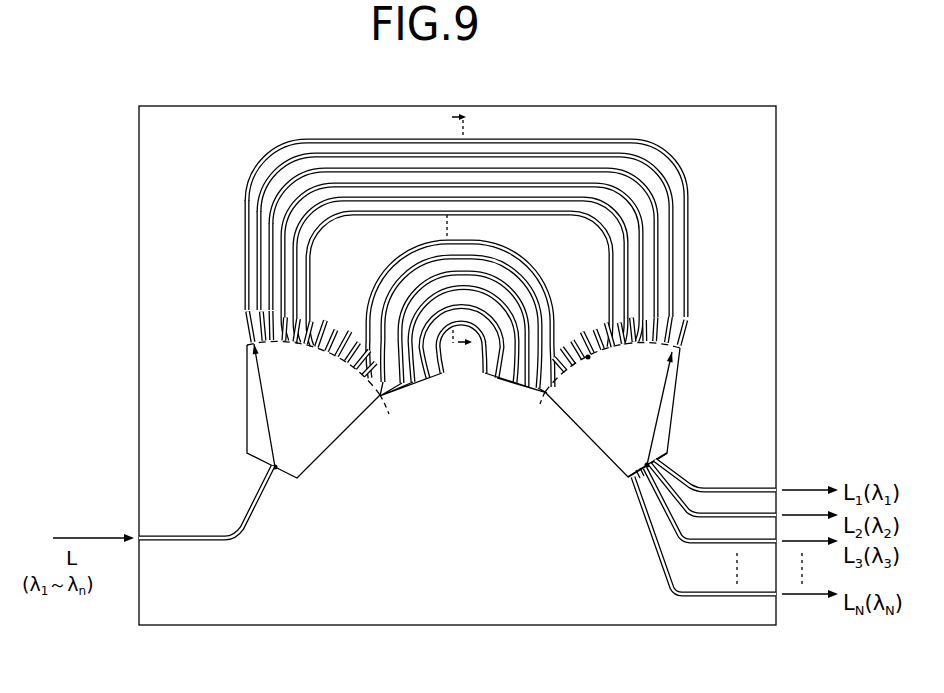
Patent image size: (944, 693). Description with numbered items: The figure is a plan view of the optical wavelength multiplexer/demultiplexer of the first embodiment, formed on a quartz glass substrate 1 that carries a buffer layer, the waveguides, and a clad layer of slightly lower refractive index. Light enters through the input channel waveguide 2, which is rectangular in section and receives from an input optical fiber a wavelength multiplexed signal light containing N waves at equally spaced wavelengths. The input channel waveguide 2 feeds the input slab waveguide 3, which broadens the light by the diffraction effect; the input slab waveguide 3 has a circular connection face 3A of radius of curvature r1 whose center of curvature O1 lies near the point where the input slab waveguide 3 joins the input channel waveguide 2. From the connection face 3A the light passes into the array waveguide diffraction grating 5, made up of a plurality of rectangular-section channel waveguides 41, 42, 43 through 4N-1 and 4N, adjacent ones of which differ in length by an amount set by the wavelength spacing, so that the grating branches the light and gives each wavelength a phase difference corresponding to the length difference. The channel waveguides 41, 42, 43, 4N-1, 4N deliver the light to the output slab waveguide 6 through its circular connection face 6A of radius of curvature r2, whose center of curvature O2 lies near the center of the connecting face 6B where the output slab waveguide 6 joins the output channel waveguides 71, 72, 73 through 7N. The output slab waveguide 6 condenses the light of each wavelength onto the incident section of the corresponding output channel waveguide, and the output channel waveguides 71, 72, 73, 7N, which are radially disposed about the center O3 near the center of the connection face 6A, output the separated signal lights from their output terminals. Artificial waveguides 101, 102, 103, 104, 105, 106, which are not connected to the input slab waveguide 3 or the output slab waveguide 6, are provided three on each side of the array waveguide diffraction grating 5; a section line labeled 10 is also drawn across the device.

The quartz glass substrate 1 is at (750, 262).
The input channel waveguide 2 is at (183, 542).
The input slab waveguide 3 is at (332, 440).
The circular connection face 3A is at (380, 400).
The channel waveguide 41 is at (427, 218).
The channel waveguide 42 is at (419, 218).
The channel waveguide 43 is at (422, 220).
The channel waveguide 4N-1 is at (512, 273).
The channel waveguide 4N is at (512, 308).
The array waveguide diffraction grating 5 is at (427, 276).
The output slab waveguide 6 is at (583, 436).
The circular connection face 6A is at (545, 392).
The connecting face 6B is at (632, 480).
The output channel waveguide 71 is at (747, 491).
The output channel waveguide 72 is at (710, 511).
The output channel waveguide 73 is at (720, 547).
The output channel waveguide 7N is at (690, 598).
The cross-section line 10 is at (472, 240).
The artificial waveguide 101 is at (246, 240).
The artificial waveguide 102 is at (258, 265).
The artificial waveguide 103 is at (268, 292).
The artificial waveguide 104 is at (426, 382).
The artificial waveguide 105 is at (461, 355).
The artificial waveguide 106 is at (497, 384).
The center of curvature O1 is at (277, 472).
The center of curvature O2 is at (652, 462).
The center O3 is at (589, 360).
The radius of curvature r1 is at (262, 402).
The radius of curvature r2 is at (665, 392).